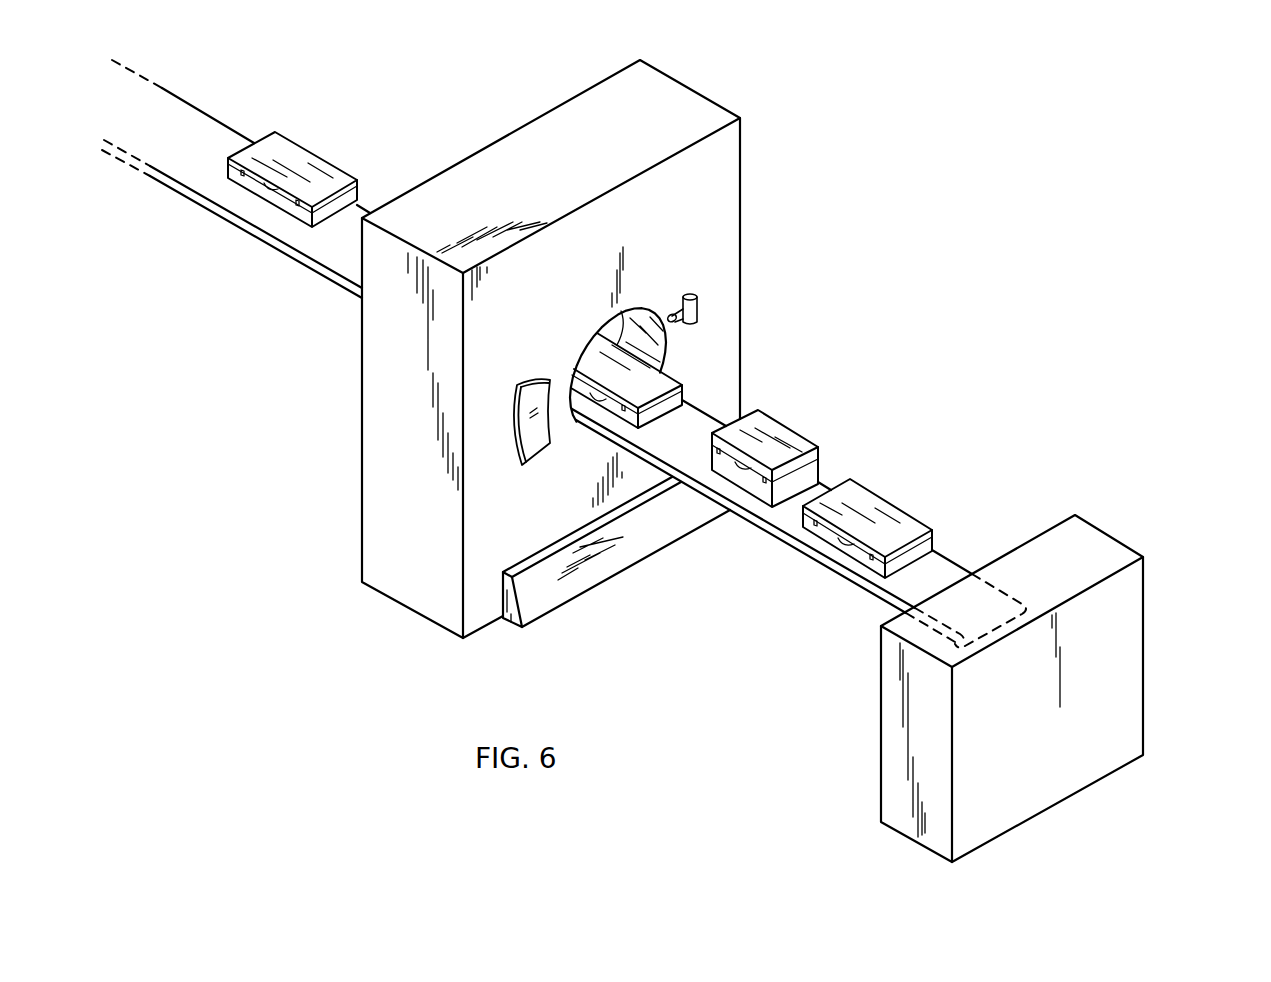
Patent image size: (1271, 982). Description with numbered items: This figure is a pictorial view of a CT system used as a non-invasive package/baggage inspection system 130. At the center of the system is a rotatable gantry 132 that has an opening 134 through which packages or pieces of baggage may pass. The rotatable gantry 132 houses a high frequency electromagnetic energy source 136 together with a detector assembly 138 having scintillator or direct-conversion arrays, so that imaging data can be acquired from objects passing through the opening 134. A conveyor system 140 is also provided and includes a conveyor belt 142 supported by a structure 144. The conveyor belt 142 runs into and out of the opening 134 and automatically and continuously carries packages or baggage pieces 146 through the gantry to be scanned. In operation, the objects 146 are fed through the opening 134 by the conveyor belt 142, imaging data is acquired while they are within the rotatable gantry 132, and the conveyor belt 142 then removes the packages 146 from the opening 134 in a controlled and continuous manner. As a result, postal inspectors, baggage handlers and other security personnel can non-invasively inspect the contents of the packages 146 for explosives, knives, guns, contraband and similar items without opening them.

The package/baggage inspection system 130 is at (1014, 370).
The rotatable gantry 132 is at (701, 222).
The opening 134 is at (660, 355).
The high frequency electromagnetic energy source 136 is at (700, 306).
The detector assembly 138 is at (533, 398).
The conveyor system 140 is at (150, 205).
The conveyor belt 142 is at (337, 241).
The structure 144 is at (1143, 625).
The packages or baggage pieces 146 is at (300, 162).